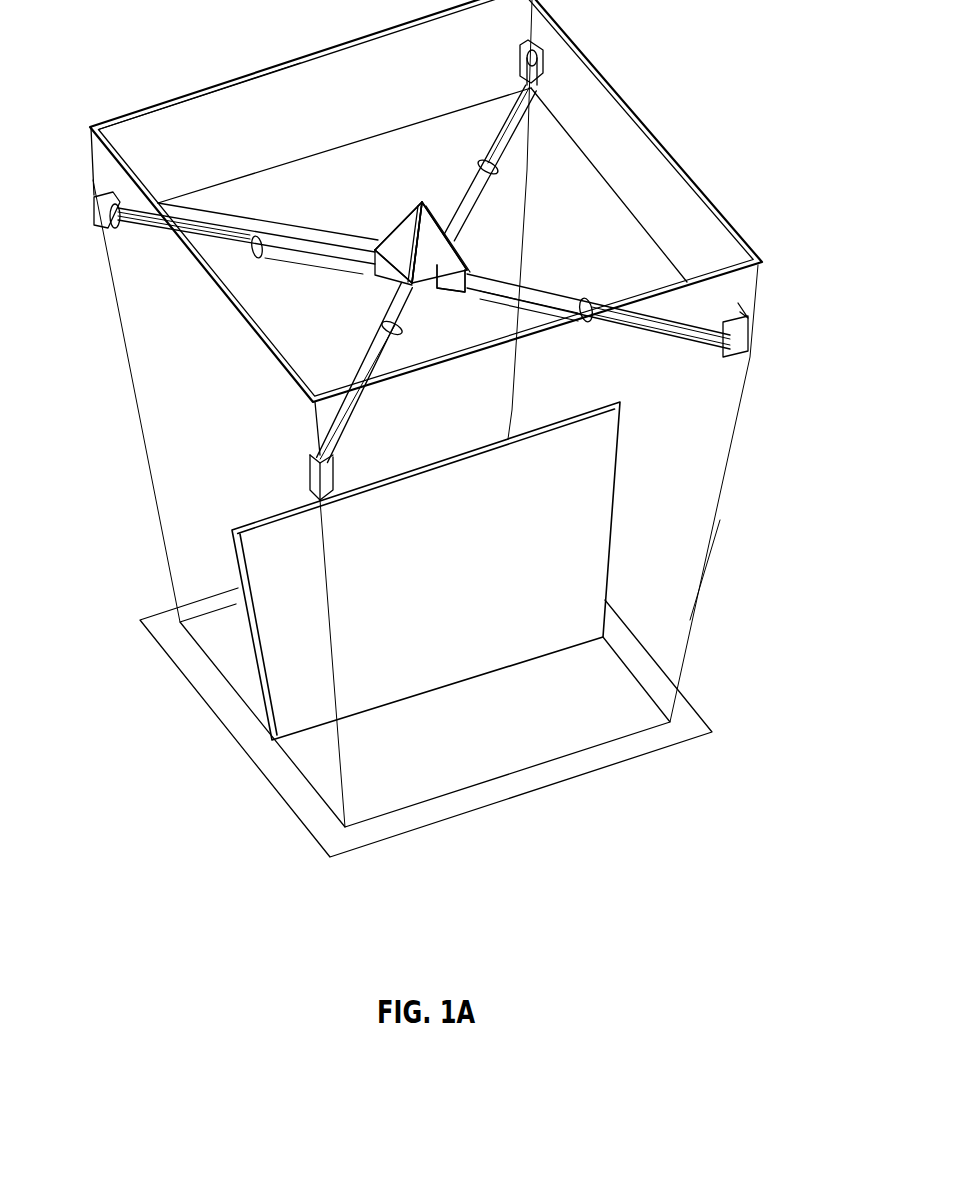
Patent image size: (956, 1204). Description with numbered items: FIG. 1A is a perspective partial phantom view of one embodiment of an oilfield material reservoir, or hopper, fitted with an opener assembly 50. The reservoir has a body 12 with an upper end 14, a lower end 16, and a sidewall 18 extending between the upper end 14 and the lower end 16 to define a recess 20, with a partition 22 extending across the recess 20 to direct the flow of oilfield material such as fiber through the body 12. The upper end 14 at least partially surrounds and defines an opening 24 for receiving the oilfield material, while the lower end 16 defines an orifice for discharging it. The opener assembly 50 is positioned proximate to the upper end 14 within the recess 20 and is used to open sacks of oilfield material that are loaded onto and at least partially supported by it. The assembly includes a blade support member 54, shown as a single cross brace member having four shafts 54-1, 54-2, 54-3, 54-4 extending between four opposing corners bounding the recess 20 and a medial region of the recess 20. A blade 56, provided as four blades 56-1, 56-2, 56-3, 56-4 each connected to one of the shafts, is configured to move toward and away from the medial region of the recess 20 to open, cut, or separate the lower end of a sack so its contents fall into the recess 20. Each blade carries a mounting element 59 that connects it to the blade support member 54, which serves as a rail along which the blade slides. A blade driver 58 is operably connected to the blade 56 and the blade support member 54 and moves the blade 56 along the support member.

The body 12 is at (707, 478).
The upper end 14 is at (212, 80).
The lower end 16 is at (583, 752).
The sidewall 18 is at (697, 543).
The recess 20 is at (318, 148).
The partition 22 is at (277, 677).
The opening 24 is at (175, 132).
The opener assembly 50 is at (642, 263).
The blade support member 54 is at (527, 82).
The shaft 54-1 is at (237, 217).
The shaft 54-2 is at (495, 115).
The shaft 54-3 is at (583, 293).
The shaft 54-4 is at (363, 360).
The blade 56 is at (438, 248).
The blade 56-1 is at (398, 213).
The blade 56-2 is at (420, 200).
The blade 56-3 is at (460, 252).
The blade 56-4 is at (400, 232).
The blade driver 58 is at (317, 267).
The mounting element 59 is at (448, 287).